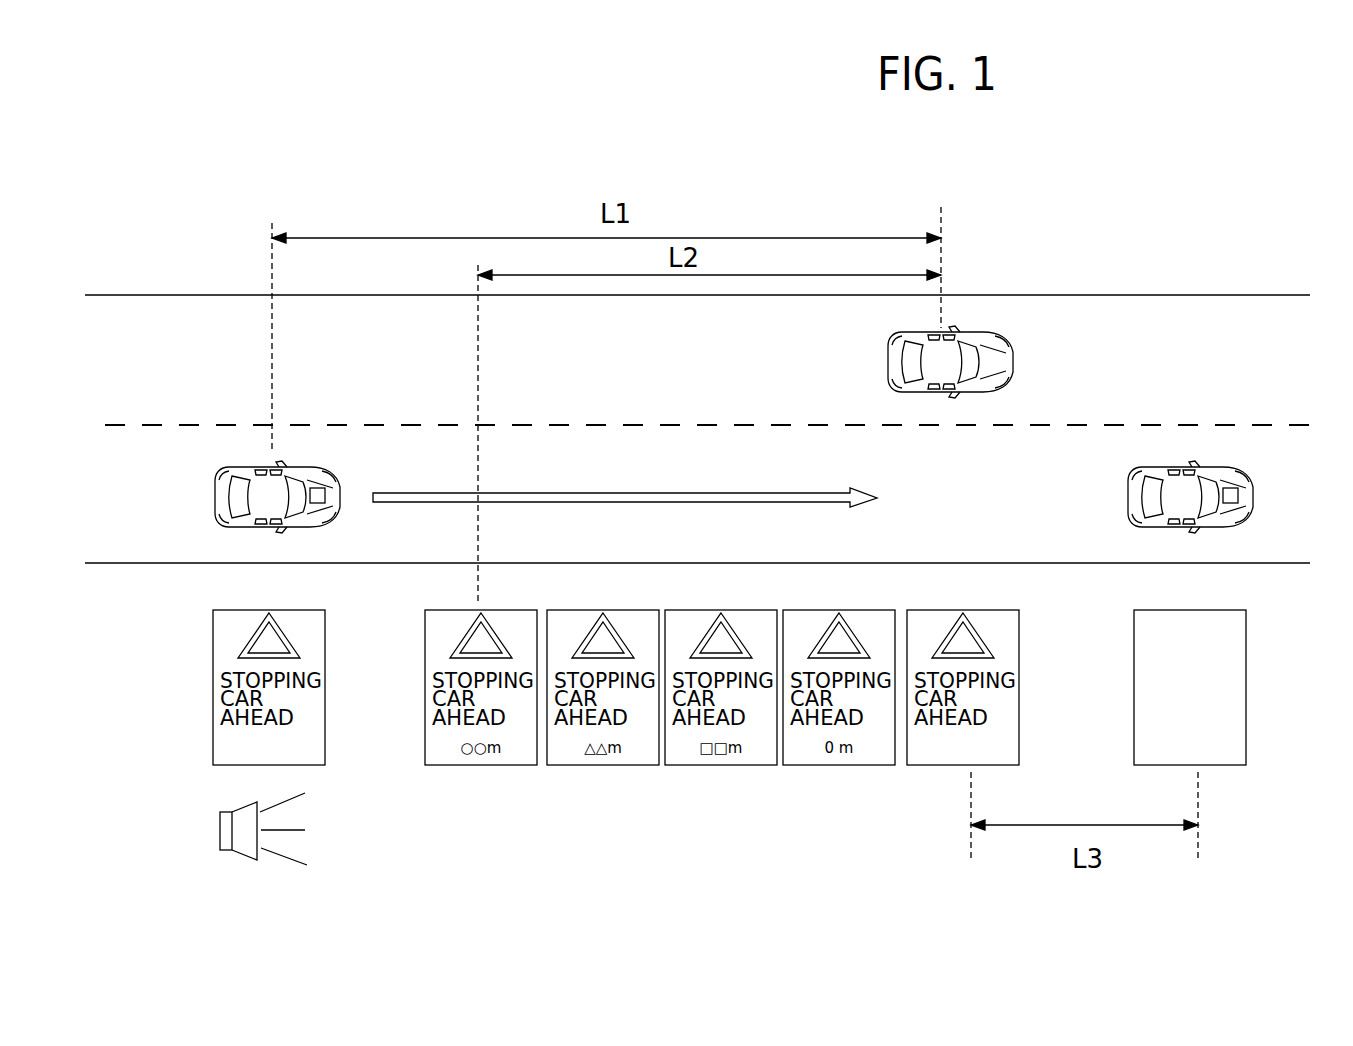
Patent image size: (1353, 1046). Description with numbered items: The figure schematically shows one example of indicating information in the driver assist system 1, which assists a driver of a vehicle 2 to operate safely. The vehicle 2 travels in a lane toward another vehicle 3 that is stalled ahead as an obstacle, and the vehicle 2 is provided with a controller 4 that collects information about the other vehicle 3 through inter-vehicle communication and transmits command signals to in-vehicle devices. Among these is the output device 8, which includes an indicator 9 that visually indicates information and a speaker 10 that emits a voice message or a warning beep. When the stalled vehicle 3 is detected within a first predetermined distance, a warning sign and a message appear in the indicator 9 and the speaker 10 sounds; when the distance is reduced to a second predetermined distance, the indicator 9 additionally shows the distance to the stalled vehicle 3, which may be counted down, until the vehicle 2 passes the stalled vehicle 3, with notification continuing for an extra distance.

The driver assist system 1 is at (1190, 136).
The vehicle 2 is at (215, 495).
The other vehicle 3 is at (888, 360).
The controller 4 is at (323, 485).
The output device 8 is at (133, 757).
The indicator 9 is at (213, 745).
The speaker 10 is at (220, 835).